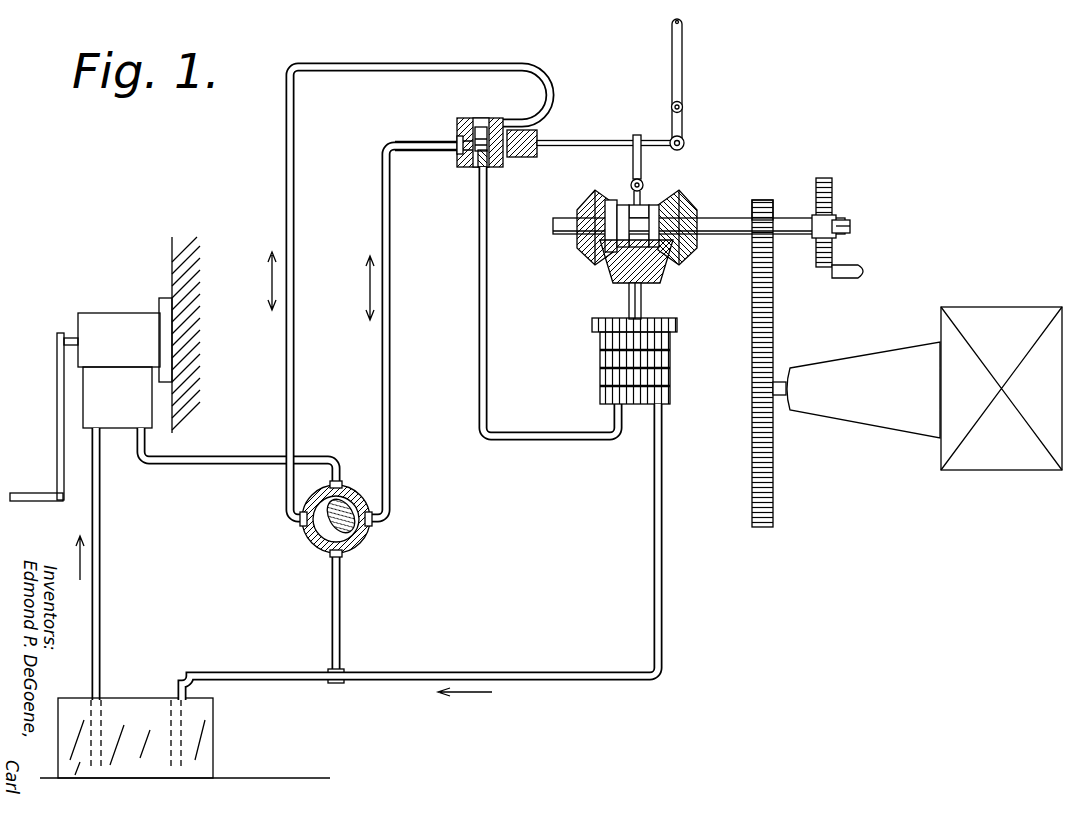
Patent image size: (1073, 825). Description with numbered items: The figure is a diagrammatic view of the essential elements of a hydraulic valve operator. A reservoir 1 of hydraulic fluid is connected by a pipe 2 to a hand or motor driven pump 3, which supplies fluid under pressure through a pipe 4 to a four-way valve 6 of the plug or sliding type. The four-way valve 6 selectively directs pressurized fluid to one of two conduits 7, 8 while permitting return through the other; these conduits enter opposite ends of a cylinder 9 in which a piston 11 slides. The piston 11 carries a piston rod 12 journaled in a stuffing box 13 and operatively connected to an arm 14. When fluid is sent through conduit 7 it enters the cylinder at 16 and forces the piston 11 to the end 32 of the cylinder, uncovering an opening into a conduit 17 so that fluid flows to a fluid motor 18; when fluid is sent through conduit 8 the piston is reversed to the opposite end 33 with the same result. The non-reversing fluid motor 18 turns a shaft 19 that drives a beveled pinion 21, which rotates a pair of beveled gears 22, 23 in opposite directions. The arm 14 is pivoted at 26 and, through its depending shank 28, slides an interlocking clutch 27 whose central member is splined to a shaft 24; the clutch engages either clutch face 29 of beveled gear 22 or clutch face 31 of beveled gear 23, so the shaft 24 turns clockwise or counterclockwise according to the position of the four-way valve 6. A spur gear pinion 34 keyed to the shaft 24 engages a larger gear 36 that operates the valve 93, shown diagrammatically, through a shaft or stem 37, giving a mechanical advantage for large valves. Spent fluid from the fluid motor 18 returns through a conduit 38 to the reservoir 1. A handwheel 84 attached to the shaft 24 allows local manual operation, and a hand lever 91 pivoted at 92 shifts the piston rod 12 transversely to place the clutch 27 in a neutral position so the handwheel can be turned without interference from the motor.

The reservoir 1 is at (130, 698).
The pipe 2 is at (101, 558).
The pump 3 is at (112, 313).
The pipe 4 is at (318, 458).
The four-way valve 6 is at (370, 538).
The conduit 7 is at (286, 390).
The conduit 8 is at (390, 396).
The cylinder 9 is at (478, 120).
The piston 11 is at (473, 168).
The piston rod 12 is at (550, 142).
The stuffing box 13 is at (530, 130).
The arm 14 is at (641, 134).
The cylinder inlet 16 is at (500, 120).
The conduit 17 is at (490, 247).
The fluid motor 18 is at (672, 368).
The shaft 19 is at (643, 312).
The beveled pinion 21 is at (668, 279).
The beveled gear 22 is at (590, 265).
The beveled gear 23 is at (684, 200).
The shaft 24 is at (733, 217).
The pivot 26 is at (642, 185).
The interlocking clutch 27 is at (612, 276).
The depending shank 28 is at (622, 198).
The clutch face 29 is at (585, 250).
The clutch face 31 is at (670, 258).
The cylinder end 32 is at (458, 160).
The cylinder end 33 is at (493, 170).
The spur gear pinion 34 is at (775, 200).
The gear 36 is at (775, 330).
The shaft or stem 37 is at (778, 383).
The conduit 38 is at (662, 600).
The handwheel 84 is at (832, 195).
The hand lever 91 is at (681, 72).
The pivot 92 is at (684, 108).
The valve 93 is at (993, 308).